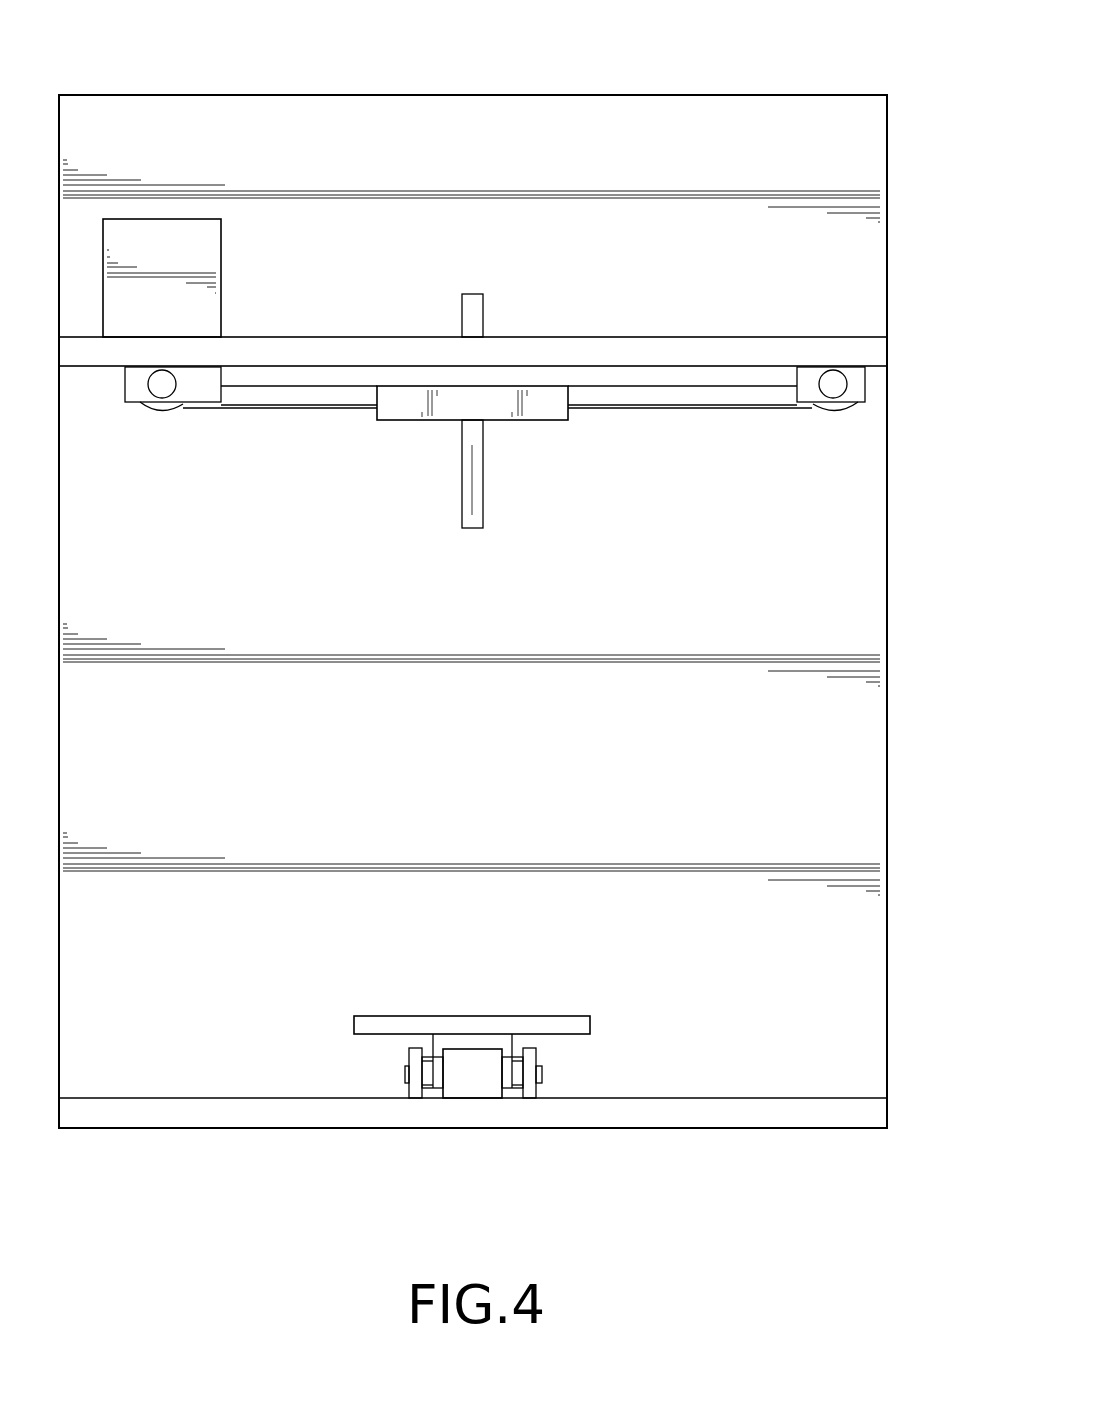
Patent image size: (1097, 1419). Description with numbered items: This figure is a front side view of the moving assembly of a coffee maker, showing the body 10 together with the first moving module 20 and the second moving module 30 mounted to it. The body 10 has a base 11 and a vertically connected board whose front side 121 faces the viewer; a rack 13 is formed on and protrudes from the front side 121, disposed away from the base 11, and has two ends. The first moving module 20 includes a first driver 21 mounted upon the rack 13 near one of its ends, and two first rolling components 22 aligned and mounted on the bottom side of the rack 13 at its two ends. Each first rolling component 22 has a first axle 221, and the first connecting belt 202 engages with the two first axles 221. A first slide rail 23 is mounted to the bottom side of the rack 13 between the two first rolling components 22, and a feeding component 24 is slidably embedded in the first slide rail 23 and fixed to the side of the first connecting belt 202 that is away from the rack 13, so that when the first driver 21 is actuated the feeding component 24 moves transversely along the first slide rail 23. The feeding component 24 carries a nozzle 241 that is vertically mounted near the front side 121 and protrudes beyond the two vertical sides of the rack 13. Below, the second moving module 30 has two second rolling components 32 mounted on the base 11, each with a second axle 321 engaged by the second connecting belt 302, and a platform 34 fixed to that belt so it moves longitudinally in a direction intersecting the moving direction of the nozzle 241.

The body 10 is at (430, 60).
The front side 121 is at (700, 122).
The rack 13 is at (745, 347).
The base 11 is at (785, 1113).
The first driver 21 is at (224, 270).
The first moving module 20 is at (504, 438).
The first rolling components 22 is at (131, 410).
The first axle 221 is at (162, 388).
The first slide rail 23 is at (320, 378).
The first connecting belt 202 is at (668, 410).
The feeding component 24 is at (414, 414).
The nozzle 241 is at (470, 502).
The second moving module 30 is at (426, 1046).
The platform 34 is at (484, 1025).
The second rolling components 32 is at (431, 1101).
The second axle 321 is at (518, 1080).
The second connecting belt 302 is at (468, 1085).